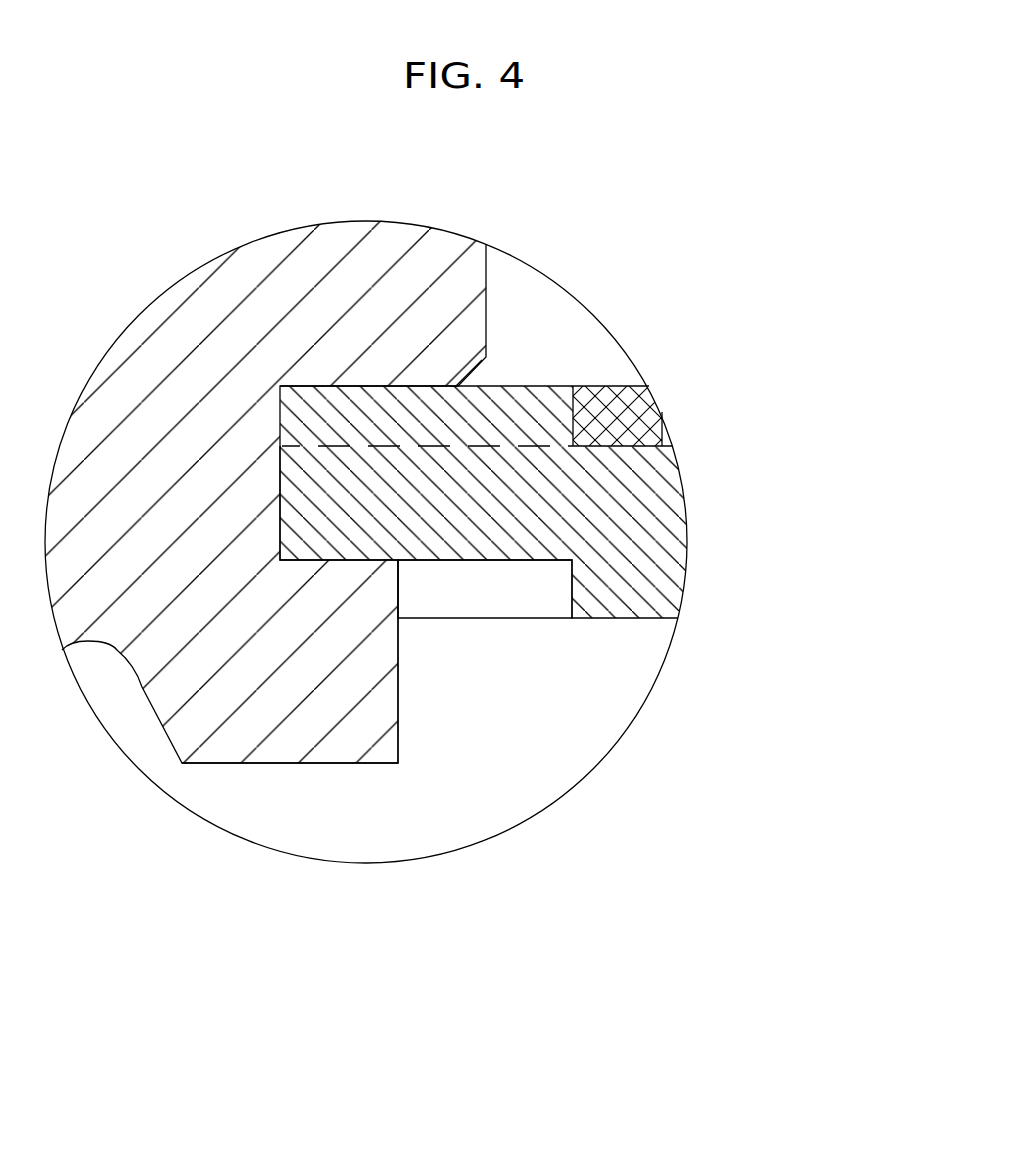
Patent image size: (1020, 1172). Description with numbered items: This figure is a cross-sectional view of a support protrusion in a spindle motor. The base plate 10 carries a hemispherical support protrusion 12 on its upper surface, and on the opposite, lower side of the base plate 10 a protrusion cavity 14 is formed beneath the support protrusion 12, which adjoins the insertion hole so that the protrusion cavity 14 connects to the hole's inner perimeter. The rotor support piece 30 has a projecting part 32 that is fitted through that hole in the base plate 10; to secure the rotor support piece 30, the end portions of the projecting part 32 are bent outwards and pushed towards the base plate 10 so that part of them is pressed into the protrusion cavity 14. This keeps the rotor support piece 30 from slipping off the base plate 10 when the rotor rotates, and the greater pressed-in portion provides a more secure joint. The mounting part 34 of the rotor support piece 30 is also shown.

The base plate 10 is at (660, 517).
The support protrusion 12 is at (510, 410).
The protrusion cavity 14 is at (490, 587).
The rotor support piece 30 is at (282, 775).
The projecting part 32 is at (337, 693).
The mounting part 34 is at (368, 387).